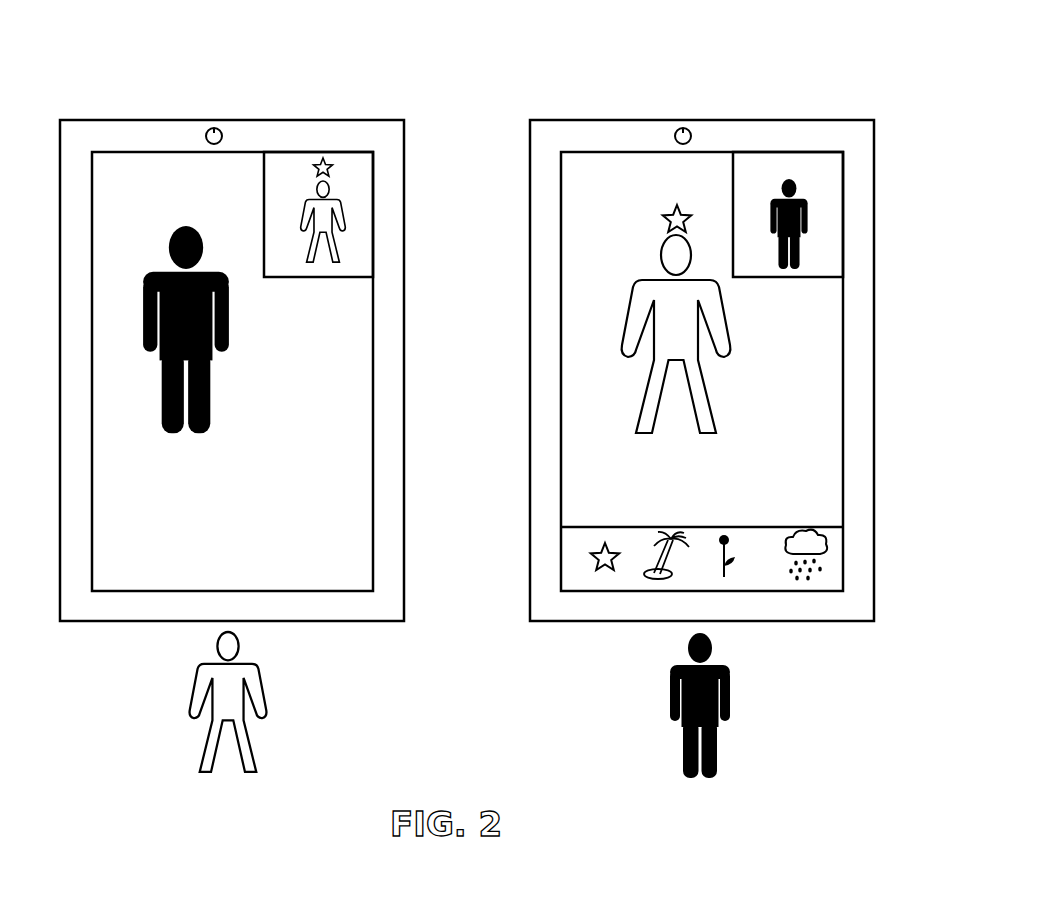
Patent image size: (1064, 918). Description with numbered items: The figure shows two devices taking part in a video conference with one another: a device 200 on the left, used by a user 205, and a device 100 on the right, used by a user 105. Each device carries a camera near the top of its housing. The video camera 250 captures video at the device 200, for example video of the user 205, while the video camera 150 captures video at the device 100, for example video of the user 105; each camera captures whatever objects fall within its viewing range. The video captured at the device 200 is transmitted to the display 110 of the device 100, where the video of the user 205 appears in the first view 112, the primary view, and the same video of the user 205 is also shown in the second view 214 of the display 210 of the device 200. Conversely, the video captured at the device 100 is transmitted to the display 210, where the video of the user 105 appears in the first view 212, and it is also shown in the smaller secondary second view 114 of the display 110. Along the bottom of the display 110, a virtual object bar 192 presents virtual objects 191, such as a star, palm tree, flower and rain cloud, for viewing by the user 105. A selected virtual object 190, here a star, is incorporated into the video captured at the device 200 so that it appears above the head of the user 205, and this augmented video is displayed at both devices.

The device 100 is at (779, 93).
The user 105 is at (700, 719).
The display 110 is at (622, 153).
The first view 112 is at (822, 326).
The second view 114 is at (827, 260).
The video camera 150 is at (678, 130).
The virtual object 190 is at (333, 167).
The virtual objects 191 is at (747, 515).
The virtual object bar 192 is at (828, 577).
The device 200 is at (277, 105).
The user 205 is at (228, 718).
The display 210 is at (143, 152).
The first view 212 is at (352, 343).
The second view 214 is at (350, 255).
The video camera 250 is at (207, 130).